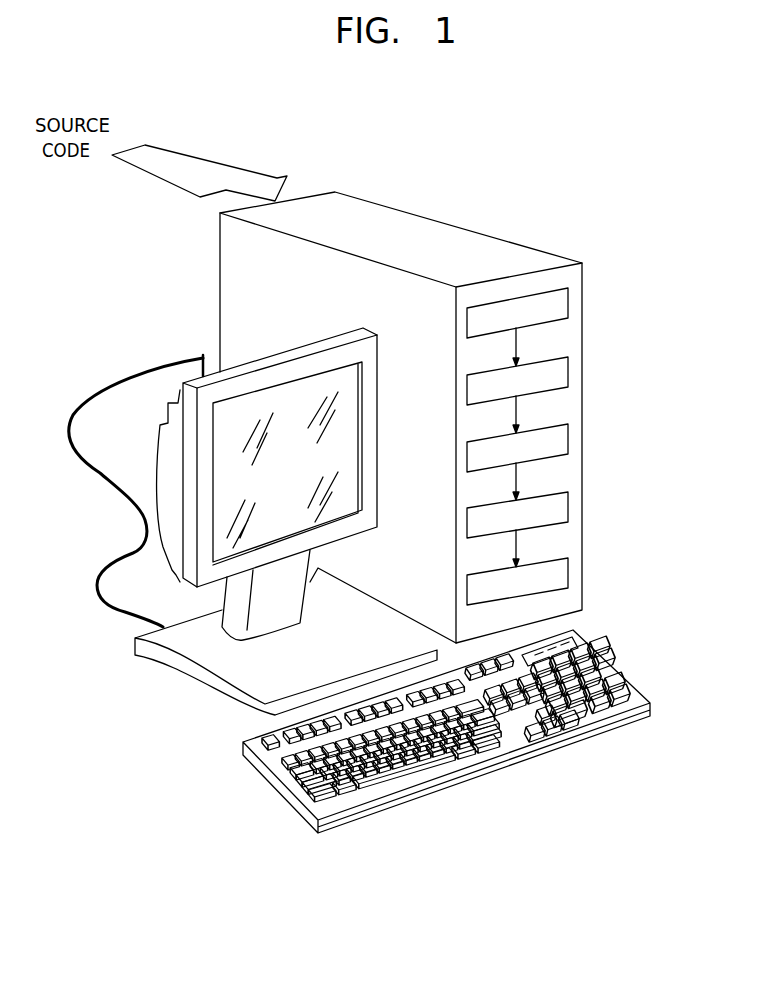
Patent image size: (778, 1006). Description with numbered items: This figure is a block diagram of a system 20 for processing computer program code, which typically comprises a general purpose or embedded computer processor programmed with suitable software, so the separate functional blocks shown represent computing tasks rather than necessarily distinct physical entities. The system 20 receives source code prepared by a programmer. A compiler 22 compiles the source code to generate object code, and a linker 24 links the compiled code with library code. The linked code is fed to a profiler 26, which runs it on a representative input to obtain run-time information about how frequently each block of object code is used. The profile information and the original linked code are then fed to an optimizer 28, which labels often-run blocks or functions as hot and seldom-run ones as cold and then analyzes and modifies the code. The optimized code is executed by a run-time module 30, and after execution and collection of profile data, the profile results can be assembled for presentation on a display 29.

The system 20 is at (468, 417).
The compiler 22 is at (569, 300).
The linker 24 is at (569, 362).
The profiler 26 is at (569, 429).
The optimizer 28 is at (569, 496).
The run-time module 30 is at (569, 563).
The display 29 is at (203, 355).